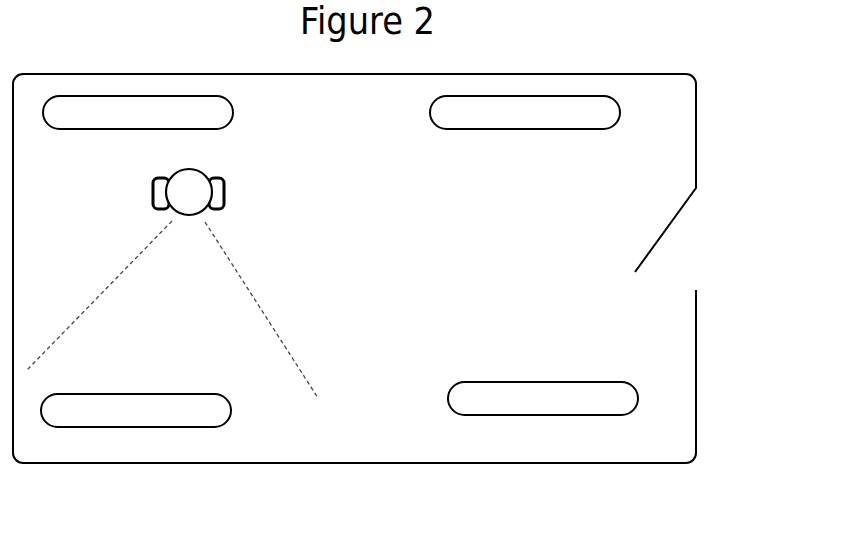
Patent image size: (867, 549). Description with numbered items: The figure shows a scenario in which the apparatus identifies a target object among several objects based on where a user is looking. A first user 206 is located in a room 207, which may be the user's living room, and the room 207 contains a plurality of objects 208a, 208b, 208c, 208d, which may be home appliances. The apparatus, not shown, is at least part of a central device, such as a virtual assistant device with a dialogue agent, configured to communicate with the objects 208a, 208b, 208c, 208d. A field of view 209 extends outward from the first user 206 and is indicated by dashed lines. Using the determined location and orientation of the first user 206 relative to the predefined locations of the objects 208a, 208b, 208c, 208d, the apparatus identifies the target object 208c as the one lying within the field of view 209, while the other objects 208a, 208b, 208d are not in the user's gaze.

The first user 206 is at (218, 190).
The room 207 is at (694, 115).
The object 208a is at (130, 95).
The object 208b is at (543, 96).
The target object 208c is at (145, 428).
The object 208d is at (518, 415).
The field of view 209 is at (172, 309).